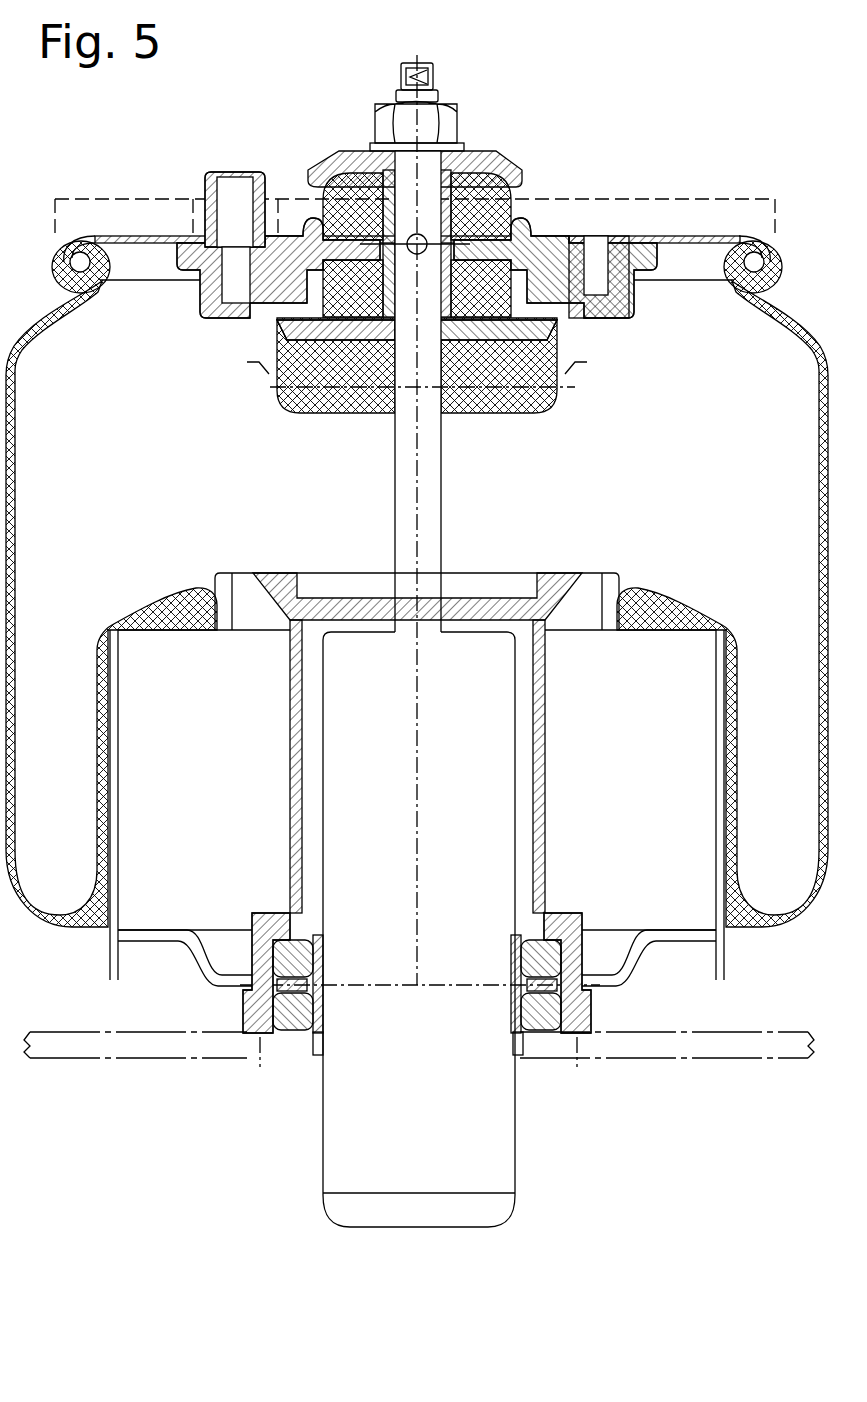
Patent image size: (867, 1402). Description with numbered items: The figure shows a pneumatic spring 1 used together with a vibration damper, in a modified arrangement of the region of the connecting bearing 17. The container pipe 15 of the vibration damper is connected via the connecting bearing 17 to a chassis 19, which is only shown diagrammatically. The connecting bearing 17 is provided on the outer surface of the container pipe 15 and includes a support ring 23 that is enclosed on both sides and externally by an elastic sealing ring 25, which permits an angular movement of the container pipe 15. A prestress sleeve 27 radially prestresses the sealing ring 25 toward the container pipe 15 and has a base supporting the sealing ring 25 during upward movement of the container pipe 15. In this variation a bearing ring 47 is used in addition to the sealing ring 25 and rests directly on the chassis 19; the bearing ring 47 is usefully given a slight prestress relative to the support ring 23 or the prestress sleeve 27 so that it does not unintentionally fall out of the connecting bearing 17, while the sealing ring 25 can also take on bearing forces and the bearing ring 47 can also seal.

The pneumatic spring 1 is at (148, 1203).
The container pipe 15 is at (343, 1153).
The connecting bearing 17 is at (556, 1077).
The chassis 19 is at (680, 1043).
The support ring 23 is at (573, 918).
The sealing ring 25 is at (245, 1032).
The prestress sleeve 27 is at (253, 945).
The bearing ring 47 is at (292, 1033).